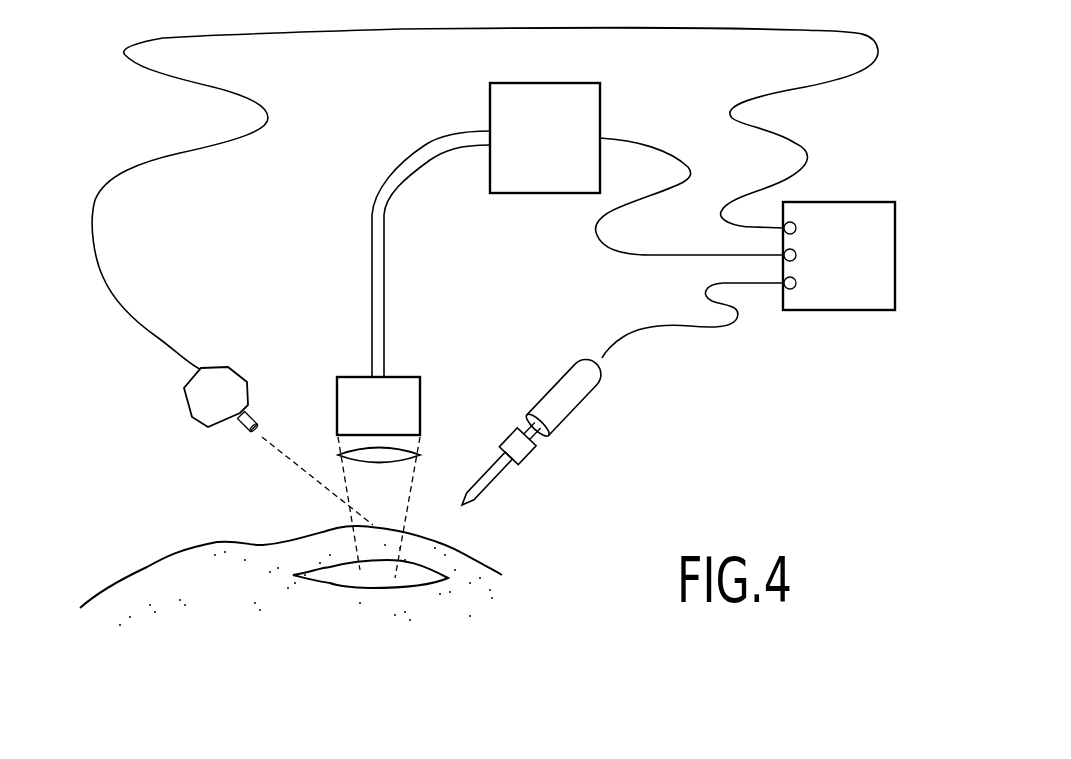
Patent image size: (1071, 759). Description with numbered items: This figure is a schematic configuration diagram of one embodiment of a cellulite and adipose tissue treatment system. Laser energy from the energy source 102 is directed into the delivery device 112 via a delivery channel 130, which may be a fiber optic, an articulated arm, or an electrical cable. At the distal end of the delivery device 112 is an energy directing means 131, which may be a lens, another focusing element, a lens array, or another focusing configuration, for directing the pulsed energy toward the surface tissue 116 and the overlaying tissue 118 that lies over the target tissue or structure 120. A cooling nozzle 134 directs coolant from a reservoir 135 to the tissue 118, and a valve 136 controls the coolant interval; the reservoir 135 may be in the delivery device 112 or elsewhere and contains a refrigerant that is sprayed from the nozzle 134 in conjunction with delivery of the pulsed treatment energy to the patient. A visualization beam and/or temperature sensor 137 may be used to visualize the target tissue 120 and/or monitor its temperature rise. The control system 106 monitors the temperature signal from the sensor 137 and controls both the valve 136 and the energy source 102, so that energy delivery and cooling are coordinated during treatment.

The energy source 102 is at (565, 142).
The control system 106 is at (868, 264).
The delivery channel 130 is at (372, 215).
The delivery device 112 is at (422, 394).
The energy directing means 131 is at (398, 468).
The visualization beam and/or temperature sensor 137 is at (215, 378).
The reservoir 135 is at (578, 407).
The valve 136 is at (518, 455).
The nozzle 134 is at (487, 493).
The surface tissue 116 is at (148, 565).
The overlaying tissue 118 is at (223, 617).
The target tissue or structure 120 is at (335, 586).